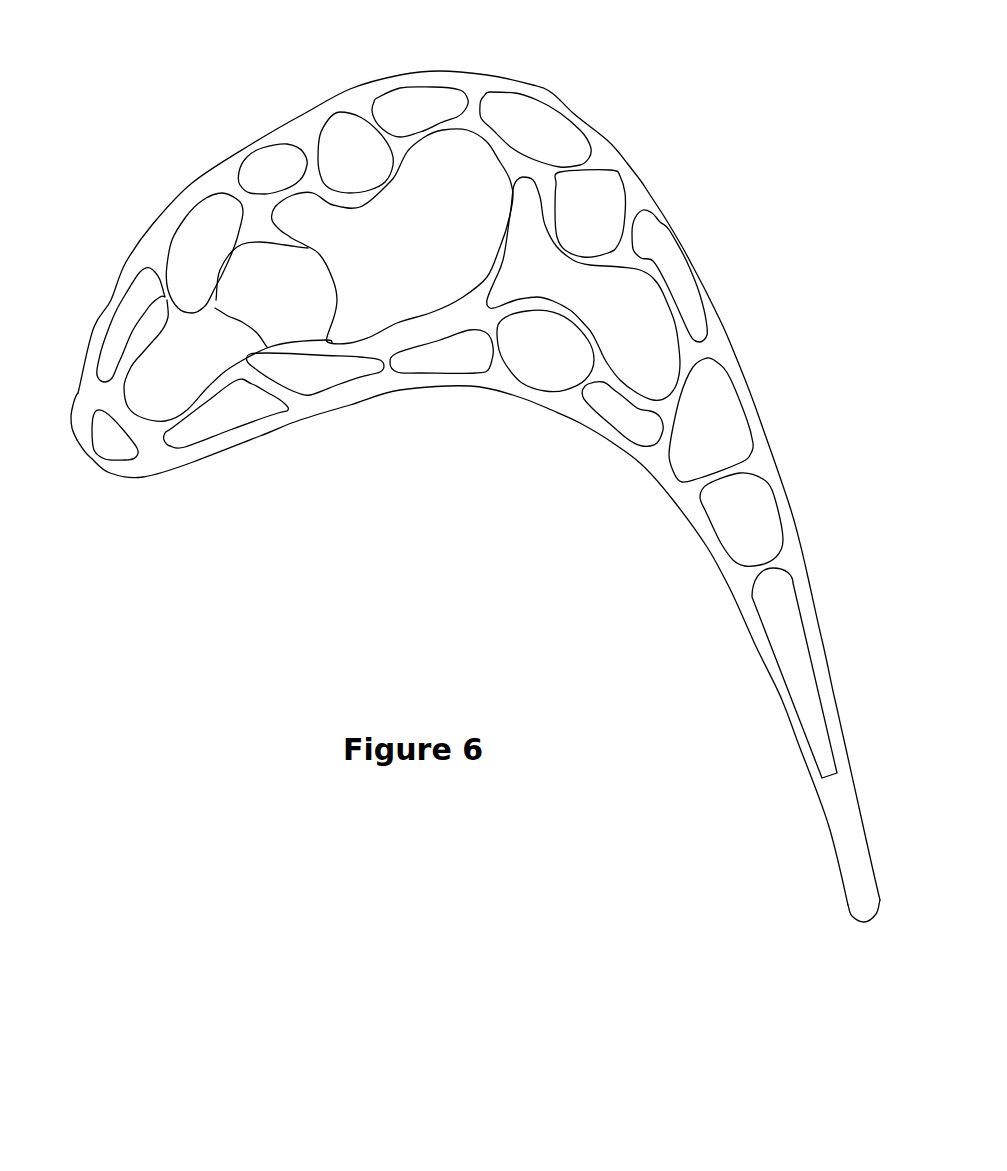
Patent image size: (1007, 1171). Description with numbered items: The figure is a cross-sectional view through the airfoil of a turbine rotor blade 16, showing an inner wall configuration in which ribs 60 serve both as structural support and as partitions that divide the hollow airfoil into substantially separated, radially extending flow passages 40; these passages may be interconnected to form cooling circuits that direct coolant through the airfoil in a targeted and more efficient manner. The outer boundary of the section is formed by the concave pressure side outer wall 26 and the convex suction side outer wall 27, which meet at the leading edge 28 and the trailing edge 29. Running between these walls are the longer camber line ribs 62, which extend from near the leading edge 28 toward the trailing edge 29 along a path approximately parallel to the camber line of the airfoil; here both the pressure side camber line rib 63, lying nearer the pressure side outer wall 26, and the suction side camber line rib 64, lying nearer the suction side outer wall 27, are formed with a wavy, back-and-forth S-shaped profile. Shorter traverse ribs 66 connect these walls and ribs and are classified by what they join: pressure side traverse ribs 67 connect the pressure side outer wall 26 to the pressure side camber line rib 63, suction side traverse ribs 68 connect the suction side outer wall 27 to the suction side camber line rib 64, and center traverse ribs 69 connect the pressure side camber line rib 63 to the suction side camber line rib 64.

The turbine rotor blade 16 is at (108, 90).
The pressure side outer wall 26 is at (330, 407).
The suction side outer wall 27 is at (335, 110).
The leading edge 28 is at (88, 462).
The trailing edge 29 is at (855, 915).
The flow passage 40 is at (527, 130).
The rib 60 is at (165, 294).
The camber line rib 62 is at (380, 236).
The pressure side camber line rib 63 is at (218, 292).
The suction side camber line rib 64 is at (437, 127).
The traverse rib 66 is at (545, 221).
The pressure side traverse rib 67 is at (493, 343).
The suction side traverse rib 68 is at (387, 132).
The center traverse rib 69 is at (512, 242).